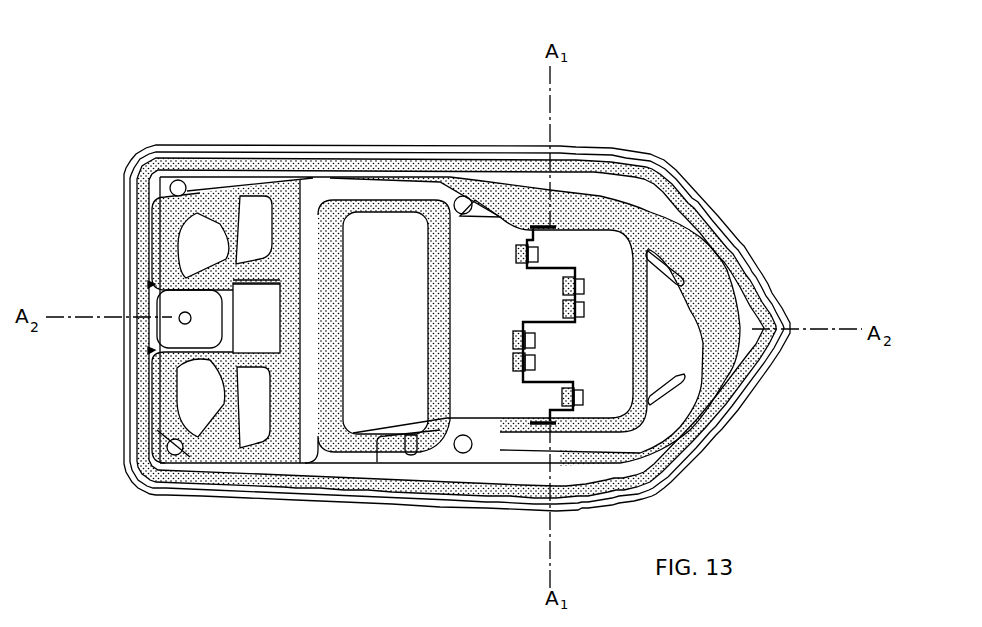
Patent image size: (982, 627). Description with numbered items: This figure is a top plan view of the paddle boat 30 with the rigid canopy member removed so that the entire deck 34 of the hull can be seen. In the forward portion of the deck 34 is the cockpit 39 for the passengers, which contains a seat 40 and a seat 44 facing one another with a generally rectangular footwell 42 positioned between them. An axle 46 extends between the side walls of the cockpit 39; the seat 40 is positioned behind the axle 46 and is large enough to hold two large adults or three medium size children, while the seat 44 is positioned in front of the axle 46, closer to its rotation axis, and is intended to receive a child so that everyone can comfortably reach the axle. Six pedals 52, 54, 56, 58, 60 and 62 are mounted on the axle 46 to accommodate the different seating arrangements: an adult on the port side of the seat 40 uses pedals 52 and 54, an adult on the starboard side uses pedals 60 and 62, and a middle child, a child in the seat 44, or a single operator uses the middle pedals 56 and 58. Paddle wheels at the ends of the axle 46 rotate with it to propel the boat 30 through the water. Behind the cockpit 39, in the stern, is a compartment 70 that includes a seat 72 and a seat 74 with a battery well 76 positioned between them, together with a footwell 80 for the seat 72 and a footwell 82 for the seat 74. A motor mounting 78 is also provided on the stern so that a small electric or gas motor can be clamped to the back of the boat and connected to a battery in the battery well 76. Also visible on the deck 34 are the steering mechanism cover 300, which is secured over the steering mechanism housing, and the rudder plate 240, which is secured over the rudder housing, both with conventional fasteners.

The paddle boat 30 is at (638, 112).
The deck 34 is at (740, 362).
The cockpit 39 is at (665, 236).
The seat 40 is at (397, 333).
The footwell 42 is at (500, 398).
The seat 44 is at (662, 348).
The axle 46 is at (481, 305).
The pedal 52 is at (538, 254).
The pedal 54 is at (584, 285).
The pedal 56 is at (584, 307).
The pedal 58 is at (536, 342).
The pedal 60 is at (536, 362).
The pedal 62 is at (584, 398).
The compartment 70 is at (162, 391).
The seat 72 is at (240, 430).
The seat 74 is at (237, 205).
The battery well 76 is at (300, 303).
The motor mounting 78 is at (150, 290).
The footwell 80 is at (157, 430).
The footwell 82 is at (183, 243).
The rudder plate 240 is at (165, 320).
The steering mechanism cover 300 is at (430, 455).